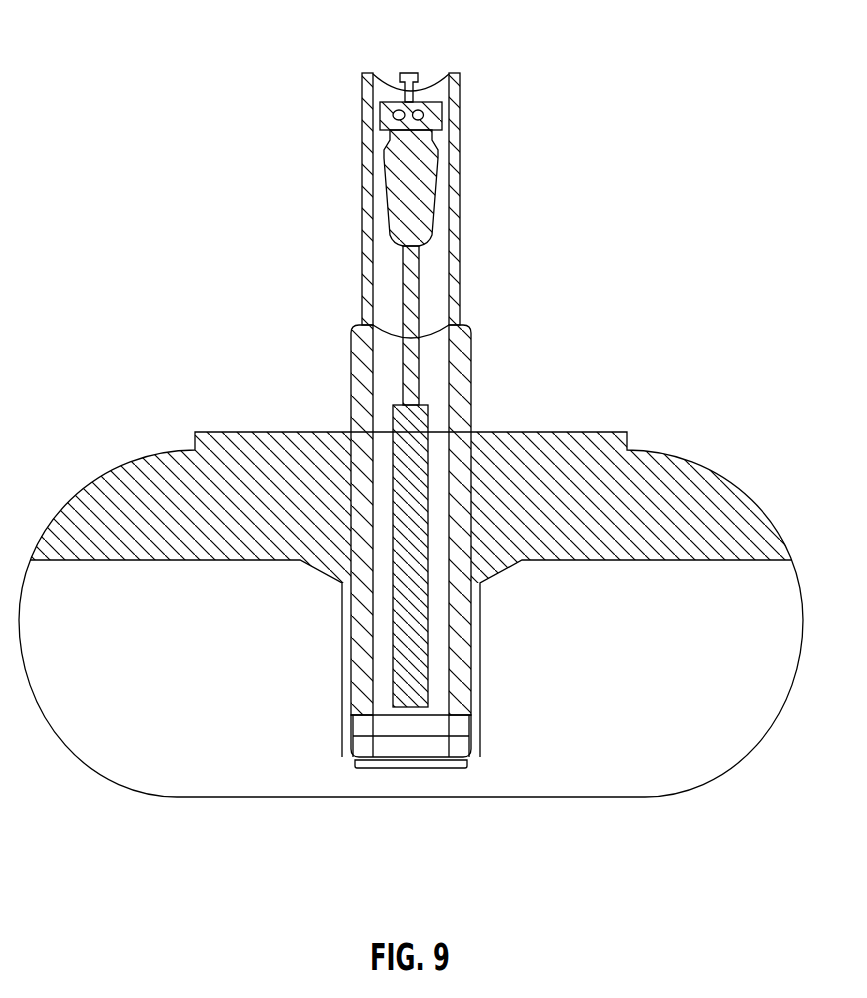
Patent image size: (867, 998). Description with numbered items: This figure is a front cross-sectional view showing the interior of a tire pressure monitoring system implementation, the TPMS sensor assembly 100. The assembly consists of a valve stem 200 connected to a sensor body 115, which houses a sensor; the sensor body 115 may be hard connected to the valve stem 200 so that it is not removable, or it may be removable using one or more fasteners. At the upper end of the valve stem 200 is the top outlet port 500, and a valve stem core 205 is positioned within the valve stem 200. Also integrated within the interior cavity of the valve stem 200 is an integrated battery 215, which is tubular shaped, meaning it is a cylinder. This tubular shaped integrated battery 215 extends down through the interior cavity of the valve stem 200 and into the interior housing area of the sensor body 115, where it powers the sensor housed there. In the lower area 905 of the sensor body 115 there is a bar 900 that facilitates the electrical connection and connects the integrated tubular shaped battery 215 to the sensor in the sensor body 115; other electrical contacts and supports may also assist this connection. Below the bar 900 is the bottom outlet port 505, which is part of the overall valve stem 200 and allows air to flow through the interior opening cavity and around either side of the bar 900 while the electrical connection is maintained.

The TPMS sensor assembly 100 is at (206, 66).
The sensor body 115 is at (628, 577).
The valve stem 200 is at (460, 203).
The valve stem core 205 is at (424, 133).
The integrated battery 215 is at (422, 457).
The top outlet port 500 is at (421, 90).
The bottom outlet port 505 is at (377, 768).
The bar 900 is at (457, 768).
The lower area 905 is at (420, 757).